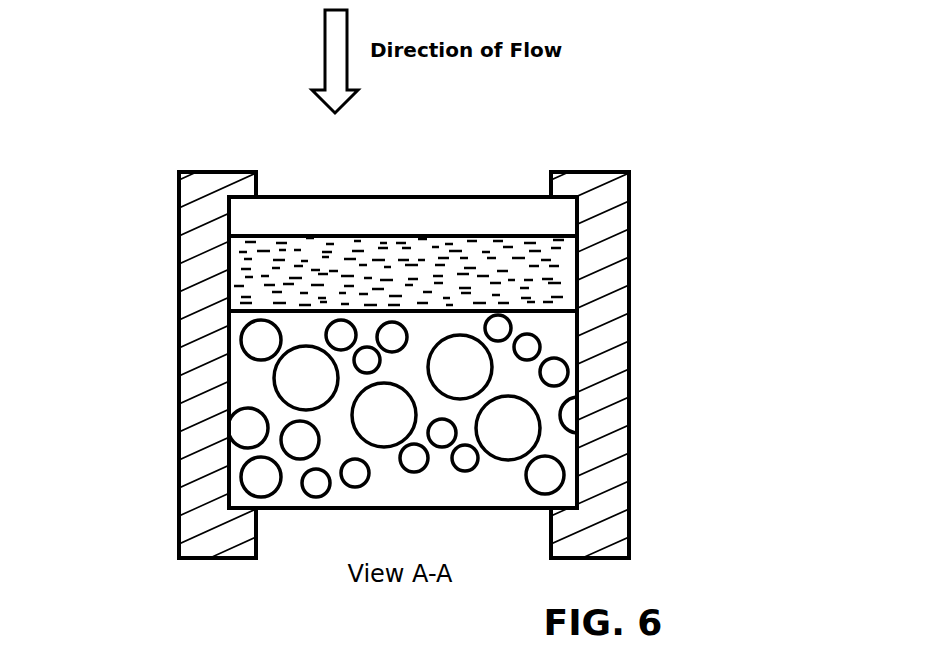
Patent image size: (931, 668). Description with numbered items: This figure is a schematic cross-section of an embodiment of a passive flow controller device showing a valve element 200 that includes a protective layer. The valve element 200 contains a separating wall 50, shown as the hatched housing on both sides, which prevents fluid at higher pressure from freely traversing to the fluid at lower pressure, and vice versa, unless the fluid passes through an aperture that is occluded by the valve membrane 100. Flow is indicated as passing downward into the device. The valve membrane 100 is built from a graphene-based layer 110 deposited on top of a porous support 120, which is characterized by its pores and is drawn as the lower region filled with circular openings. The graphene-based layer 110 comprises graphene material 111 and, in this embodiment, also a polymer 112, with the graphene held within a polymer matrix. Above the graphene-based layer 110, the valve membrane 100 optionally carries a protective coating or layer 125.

The separating wall 50 is at (216, 470).
The valve membrane 100 is at (372, 317).
The graphene-based layer 110 is at (468, 218).
The graphene material 111 is at (477, 240).
The polymer 112 is at (270, 242).
The porous support 120 is at (568, 336).
The protective coating/layer 125 is at (592, 197).
The valve element 200 is at (435, 349).